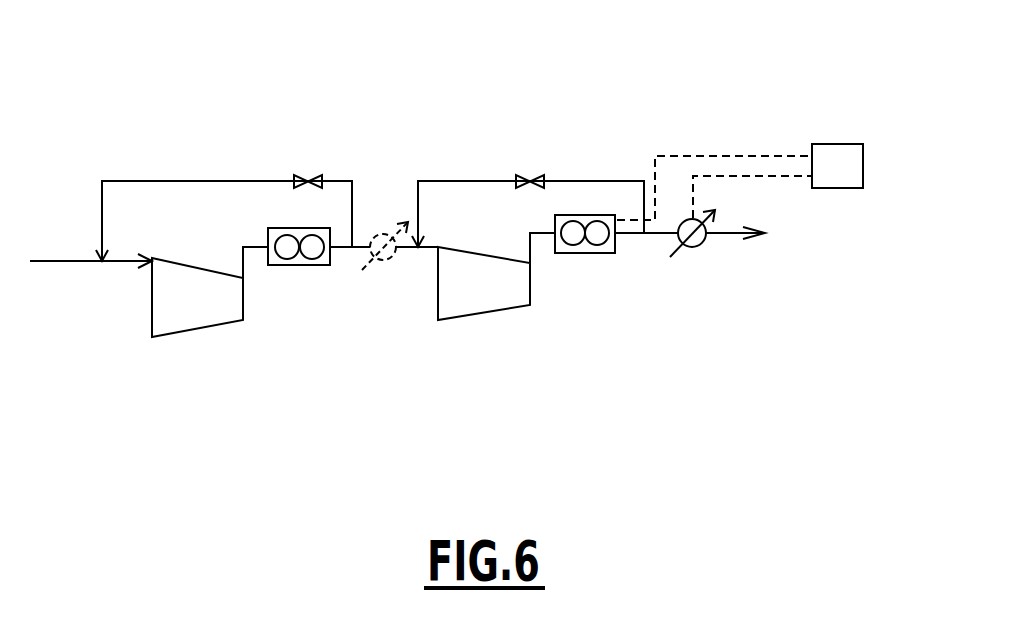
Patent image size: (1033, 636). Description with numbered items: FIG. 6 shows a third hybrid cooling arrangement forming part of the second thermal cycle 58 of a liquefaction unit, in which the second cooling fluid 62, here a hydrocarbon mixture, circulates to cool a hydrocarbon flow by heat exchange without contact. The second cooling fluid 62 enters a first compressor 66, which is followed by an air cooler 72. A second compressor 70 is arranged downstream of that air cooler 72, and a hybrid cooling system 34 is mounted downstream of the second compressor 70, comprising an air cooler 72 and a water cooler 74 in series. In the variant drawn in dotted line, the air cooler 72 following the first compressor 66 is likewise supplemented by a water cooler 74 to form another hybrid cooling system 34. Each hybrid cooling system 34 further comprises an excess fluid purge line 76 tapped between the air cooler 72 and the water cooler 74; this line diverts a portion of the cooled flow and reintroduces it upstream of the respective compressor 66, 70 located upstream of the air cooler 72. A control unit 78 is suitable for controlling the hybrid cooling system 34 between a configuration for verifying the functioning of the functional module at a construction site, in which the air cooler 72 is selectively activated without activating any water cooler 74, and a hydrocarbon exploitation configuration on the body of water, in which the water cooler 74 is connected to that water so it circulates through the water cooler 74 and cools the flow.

The hybrid cooling system 34 is at (482, 215).
The second thermal cycle 58 is at (776, 126).
The second cooling fluid 62 is at (43, 257).
The first compressor 66 is at (152, 305).
The second compressor 70 is at (512, 295).
The air cooler 72 is at (323, 265).
The water cooler 74 is at (385, 258).
The excess fluid purge line 76 is at (177, 180).
The control unit 78 is at (863, 165).